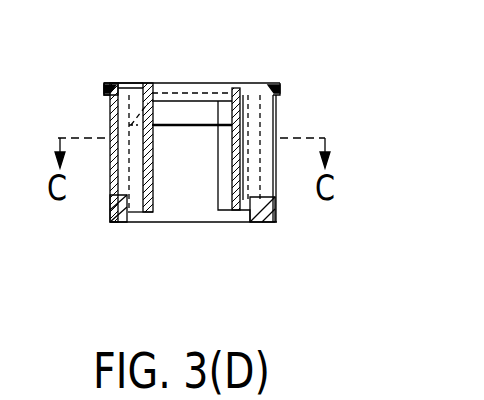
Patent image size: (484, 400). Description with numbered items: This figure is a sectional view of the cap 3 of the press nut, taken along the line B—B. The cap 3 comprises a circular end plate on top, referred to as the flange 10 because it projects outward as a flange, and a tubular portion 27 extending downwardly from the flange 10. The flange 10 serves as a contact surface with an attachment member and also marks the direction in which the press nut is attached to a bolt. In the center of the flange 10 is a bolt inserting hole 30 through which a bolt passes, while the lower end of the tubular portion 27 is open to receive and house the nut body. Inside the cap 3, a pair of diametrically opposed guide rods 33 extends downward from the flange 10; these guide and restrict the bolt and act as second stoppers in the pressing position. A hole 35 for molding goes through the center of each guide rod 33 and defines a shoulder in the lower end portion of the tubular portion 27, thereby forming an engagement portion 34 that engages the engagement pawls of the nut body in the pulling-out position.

The cap 3 is at (280, 66).
The flange 10 is at (104, 88).
The tubular portion 27 is at (110, 118).
The bolt inserting hole 30 is at (155, 85).
The guide rods 33 is at (212, 165).
The engagement portions 34 is at (117, 186).
The hole for molding 35 is at (125, 83).